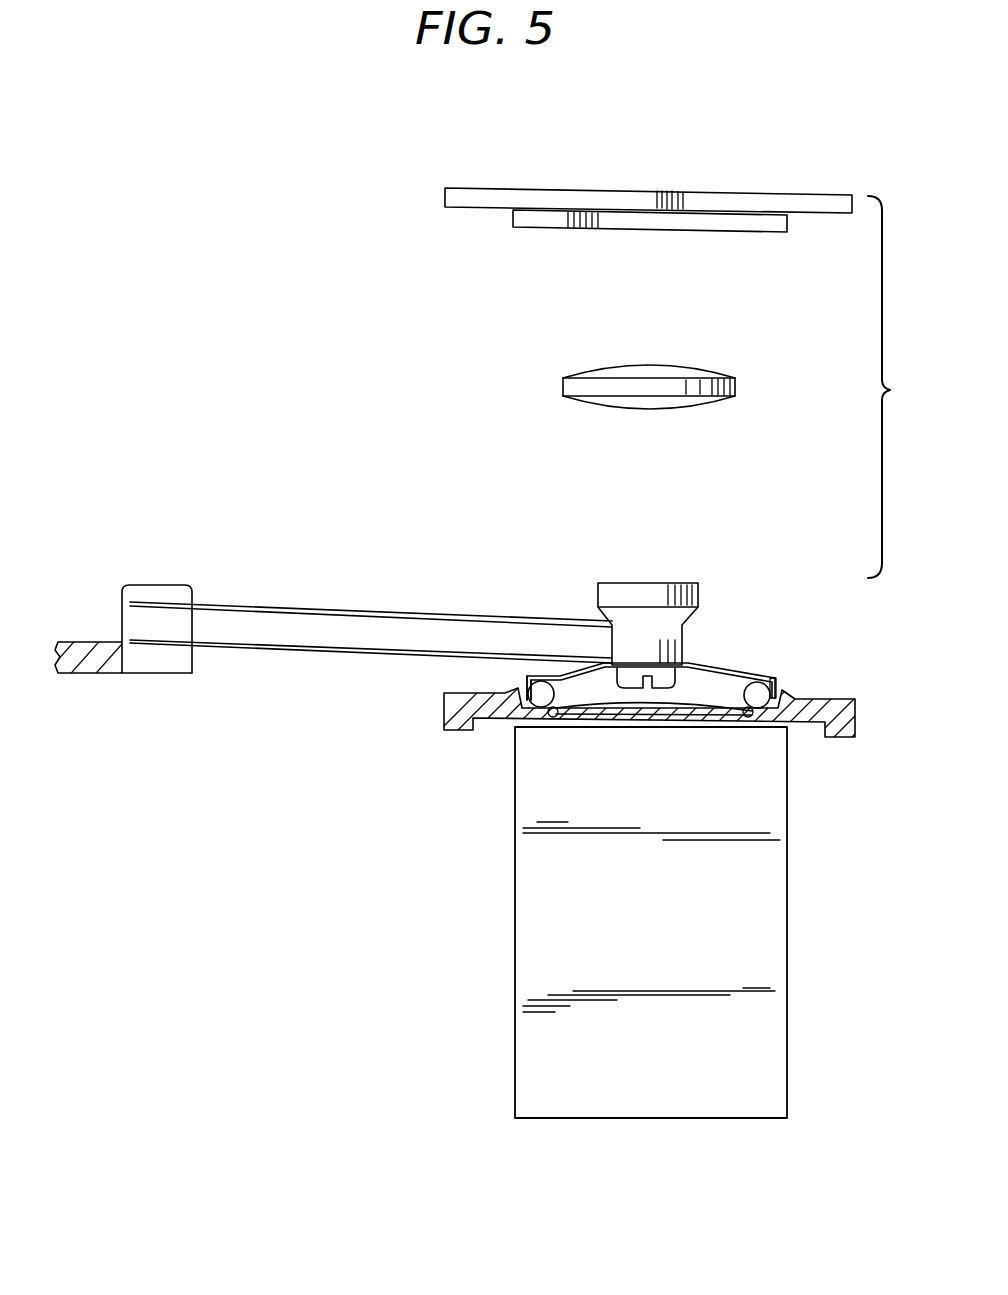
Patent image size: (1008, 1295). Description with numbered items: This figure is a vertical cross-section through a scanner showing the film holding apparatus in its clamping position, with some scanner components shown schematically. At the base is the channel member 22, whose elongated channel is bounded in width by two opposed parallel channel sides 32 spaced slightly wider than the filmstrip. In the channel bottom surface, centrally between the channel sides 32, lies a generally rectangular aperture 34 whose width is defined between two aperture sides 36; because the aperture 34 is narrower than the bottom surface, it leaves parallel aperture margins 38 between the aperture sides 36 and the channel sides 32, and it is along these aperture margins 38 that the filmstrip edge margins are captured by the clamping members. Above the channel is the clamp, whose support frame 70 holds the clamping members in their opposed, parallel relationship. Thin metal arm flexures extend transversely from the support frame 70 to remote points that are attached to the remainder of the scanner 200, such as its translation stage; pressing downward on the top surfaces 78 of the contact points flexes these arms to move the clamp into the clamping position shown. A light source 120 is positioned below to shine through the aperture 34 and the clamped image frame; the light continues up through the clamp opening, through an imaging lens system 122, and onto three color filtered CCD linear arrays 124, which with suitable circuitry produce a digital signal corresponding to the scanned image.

The color filtered CCD linear arrays 124 is at (519, 230).
The imaging lens system 122 is at (556, 391).
The top surfaces 78 is at (656, 583).
The support frame 70 is at (708, 668).
The channel sides 32 is at (505, 690).
The channel member 22 is at (850, 710).
The remainder of the scanner 200 is at (153, 673).
The aperture margins 38 is at (542, 708).
The aperture sides 36 is at (567, 713).
The aperture 34 is at (640, 713).
The light source 120 is at (540, 960).